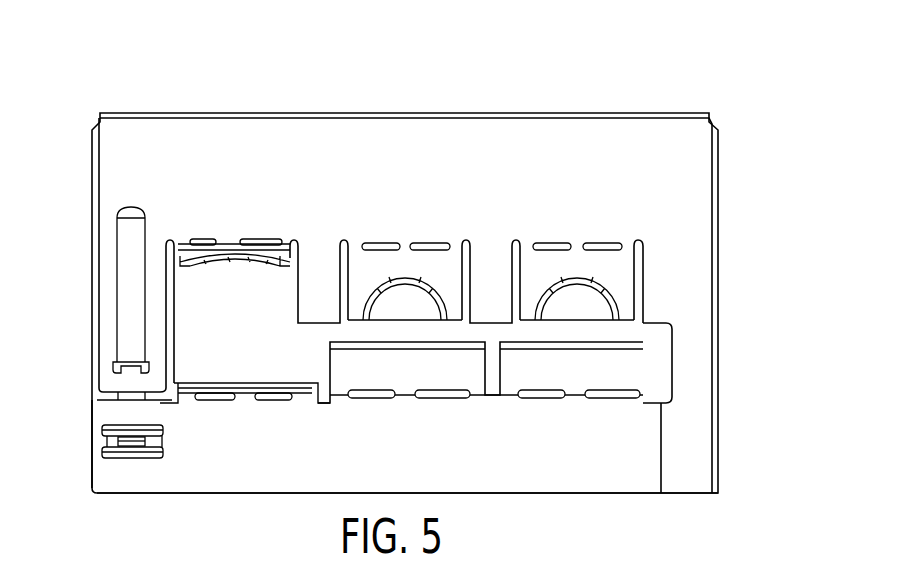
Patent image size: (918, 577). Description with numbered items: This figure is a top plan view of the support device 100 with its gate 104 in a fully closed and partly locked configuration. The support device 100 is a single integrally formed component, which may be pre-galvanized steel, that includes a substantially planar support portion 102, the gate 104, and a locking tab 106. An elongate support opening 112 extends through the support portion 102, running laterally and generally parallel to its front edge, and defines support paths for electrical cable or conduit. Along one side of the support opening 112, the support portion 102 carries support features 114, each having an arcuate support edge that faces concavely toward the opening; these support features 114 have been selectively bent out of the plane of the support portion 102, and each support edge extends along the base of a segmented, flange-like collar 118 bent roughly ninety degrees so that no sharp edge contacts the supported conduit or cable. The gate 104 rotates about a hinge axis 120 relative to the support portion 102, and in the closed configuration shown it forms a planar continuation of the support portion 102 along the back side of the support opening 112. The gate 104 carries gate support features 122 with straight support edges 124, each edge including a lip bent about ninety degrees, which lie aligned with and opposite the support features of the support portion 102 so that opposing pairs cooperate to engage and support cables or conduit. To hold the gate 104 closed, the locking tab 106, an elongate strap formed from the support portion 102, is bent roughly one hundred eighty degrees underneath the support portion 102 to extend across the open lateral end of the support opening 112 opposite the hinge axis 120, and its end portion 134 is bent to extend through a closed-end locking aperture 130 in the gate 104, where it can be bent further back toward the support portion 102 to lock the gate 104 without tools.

The support device 100 is at (392, 276).
The support portion 102 is at (680, 182).
The gate 104 is at (520, 496).
The locking tab 106 is at (126, 394).
The support opening 112 is at (184, 342).
The support features 114 is at (280, 255).
The collar 118 is at (228, 258).
The hinge axis 120 is at (661, 443).
The gate support features 122 is at (368, 375).
The support edges 124 is at (203, 386).
The locking aperture 130 is at (107, 462).
The end portion 134 is at (127, 445).